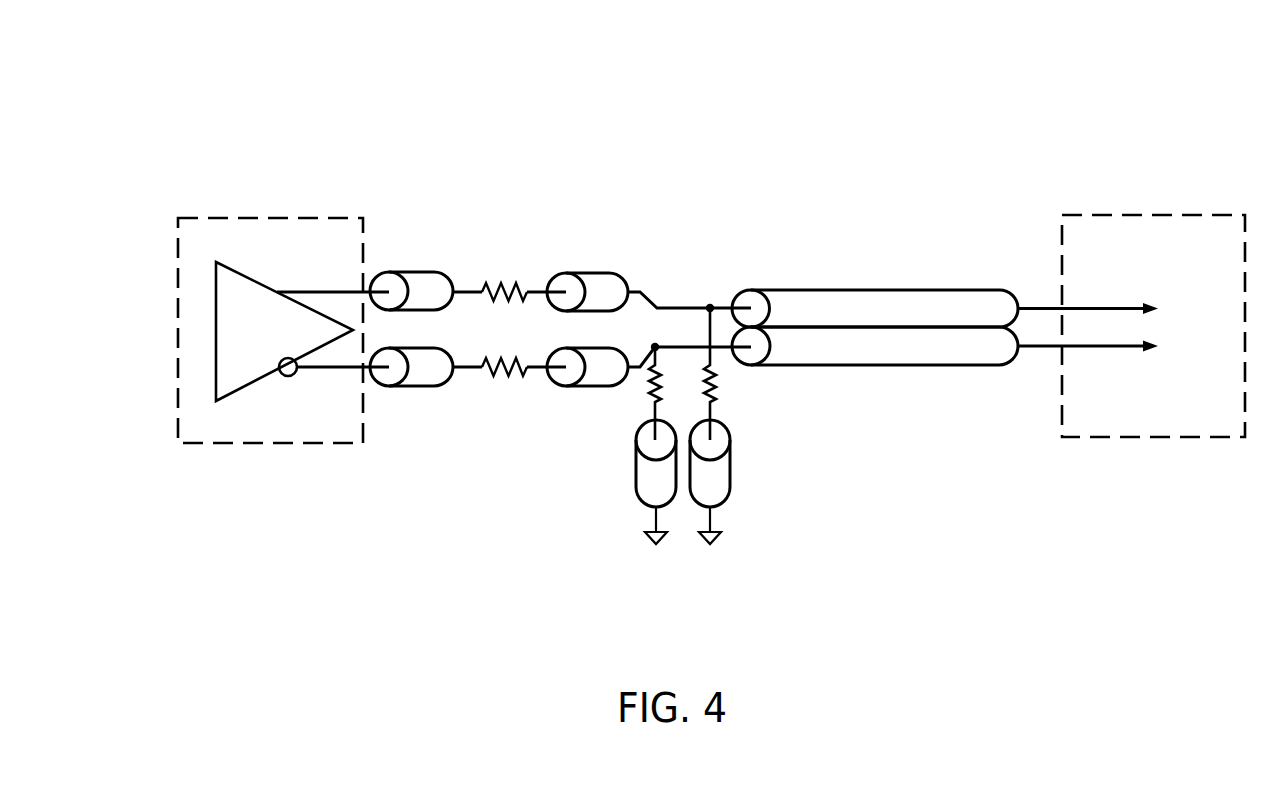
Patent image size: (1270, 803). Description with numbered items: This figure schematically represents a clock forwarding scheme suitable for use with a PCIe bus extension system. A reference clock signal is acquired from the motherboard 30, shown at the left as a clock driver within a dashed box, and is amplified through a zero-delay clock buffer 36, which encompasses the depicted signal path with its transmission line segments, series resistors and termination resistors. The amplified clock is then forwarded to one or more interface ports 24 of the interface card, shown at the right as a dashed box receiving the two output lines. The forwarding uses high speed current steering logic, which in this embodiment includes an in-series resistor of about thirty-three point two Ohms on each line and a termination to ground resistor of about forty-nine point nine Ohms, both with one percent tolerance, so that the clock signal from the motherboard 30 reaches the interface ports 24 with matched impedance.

The zero-delay clock buffer 36 is at (592, 76).
The motherboard 30 is at (331, 232).
The interface port 24 is at (1177, 230).